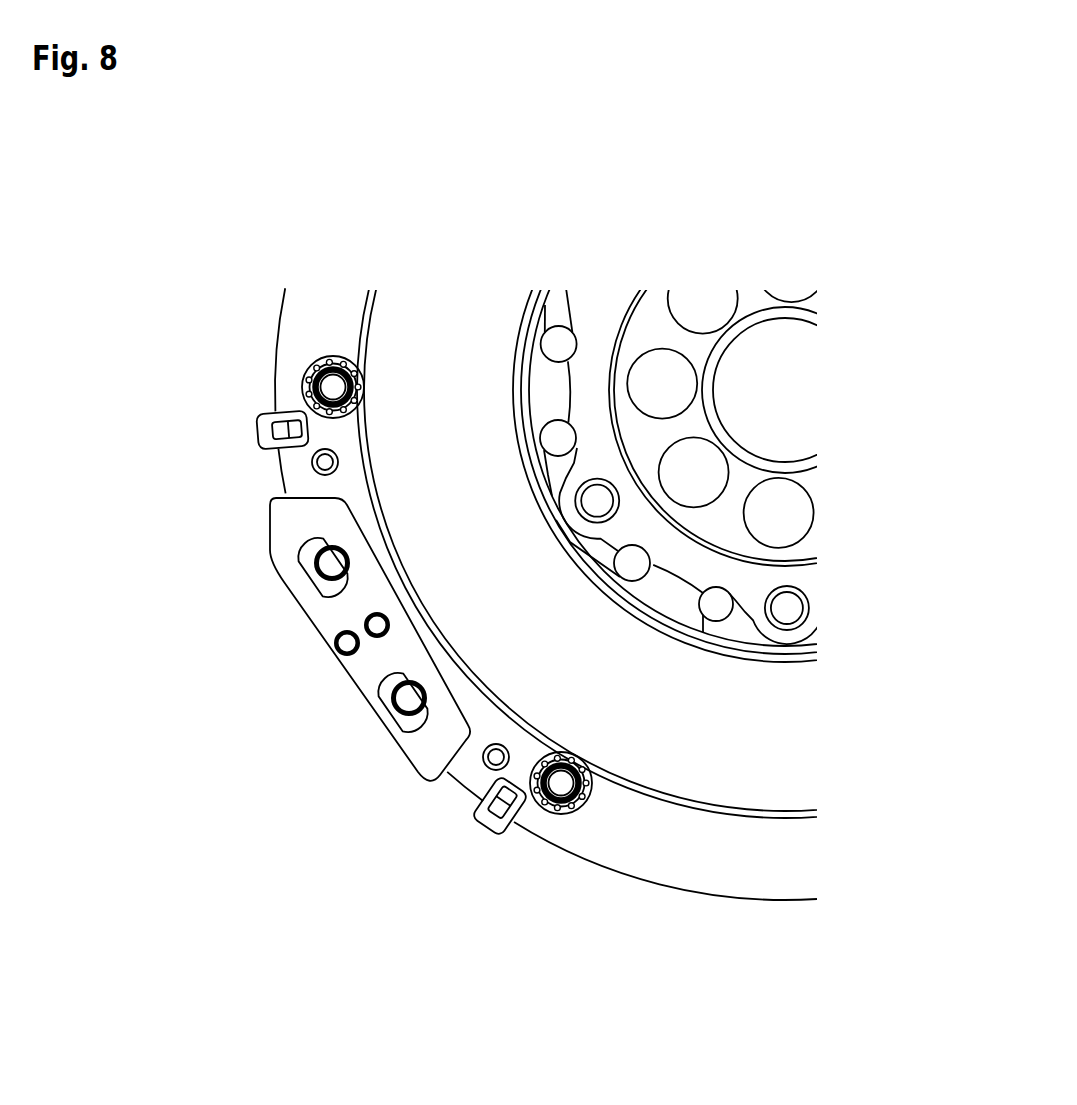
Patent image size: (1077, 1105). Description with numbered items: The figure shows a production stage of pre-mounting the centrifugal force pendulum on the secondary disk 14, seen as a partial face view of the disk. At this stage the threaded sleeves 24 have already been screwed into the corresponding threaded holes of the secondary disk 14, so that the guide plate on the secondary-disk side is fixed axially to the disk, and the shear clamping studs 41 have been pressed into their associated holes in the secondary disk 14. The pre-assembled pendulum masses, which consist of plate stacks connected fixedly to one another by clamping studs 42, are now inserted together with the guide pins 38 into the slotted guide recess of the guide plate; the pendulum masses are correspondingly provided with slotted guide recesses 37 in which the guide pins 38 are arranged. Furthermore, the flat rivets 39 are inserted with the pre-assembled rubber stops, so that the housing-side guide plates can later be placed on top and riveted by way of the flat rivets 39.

The secondary disk 14 is at (752, 737).
The threaded sleeve 24 is at (325, 385).
The slotted guide recess 37 is at (330, 600).
The guide pin 38 is at (314, 562).
The flat rivet 39 is at (282, 427).
The shear clamping stud 41 is at (312, 465).
The clamping stud 42 is at (340, 657).